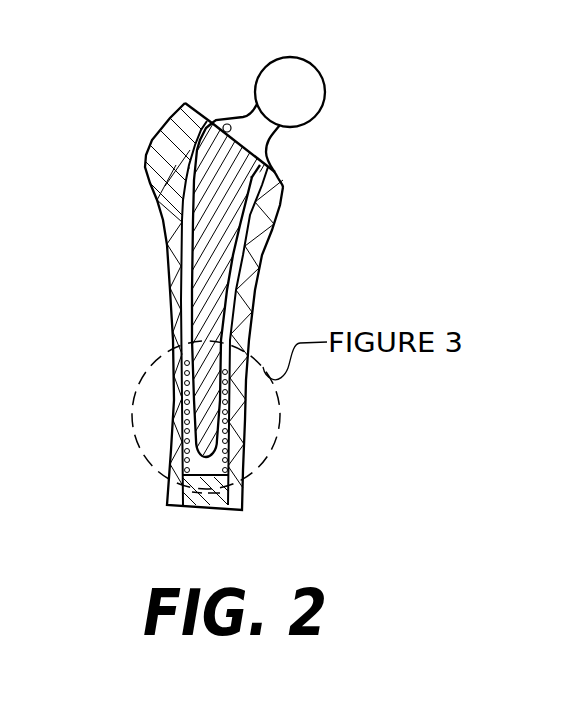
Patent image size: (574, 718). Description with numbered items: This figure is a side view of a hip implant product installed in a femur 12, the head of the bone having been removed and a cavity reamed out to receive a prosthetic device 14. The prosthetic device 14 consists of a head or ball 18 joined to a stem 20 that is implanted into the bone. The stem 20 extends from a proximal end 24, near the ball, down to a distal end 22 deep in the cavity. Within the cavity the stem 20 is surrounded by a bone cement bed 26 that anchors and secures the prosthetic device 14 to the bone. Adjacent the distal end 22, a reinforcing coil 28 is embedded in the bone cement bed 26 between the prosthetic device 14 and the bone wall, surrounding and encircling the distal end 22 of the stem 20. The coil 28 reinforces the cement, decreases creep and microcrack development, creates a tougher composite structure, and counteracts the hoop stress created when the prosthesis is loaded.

The femur 12 is at (170, 247).
The prosthetic device 14 is at (258, 137).
The head or ball 18 is at (285, 80).
The stem 20 is at (212, 272).
The distal end 22 is at (215, 410).
The proximal end 24 is at (238, 178).
The bone cement bed 26 is at (190, 168).
The reinforcing coil 28 is at (222, 462).